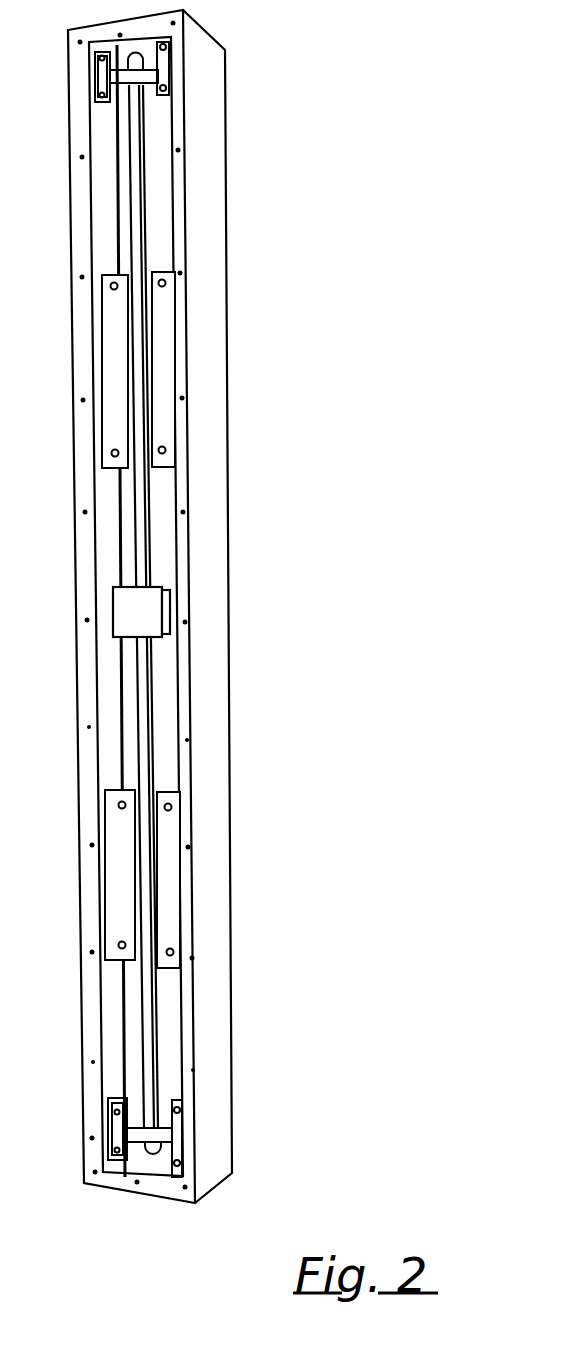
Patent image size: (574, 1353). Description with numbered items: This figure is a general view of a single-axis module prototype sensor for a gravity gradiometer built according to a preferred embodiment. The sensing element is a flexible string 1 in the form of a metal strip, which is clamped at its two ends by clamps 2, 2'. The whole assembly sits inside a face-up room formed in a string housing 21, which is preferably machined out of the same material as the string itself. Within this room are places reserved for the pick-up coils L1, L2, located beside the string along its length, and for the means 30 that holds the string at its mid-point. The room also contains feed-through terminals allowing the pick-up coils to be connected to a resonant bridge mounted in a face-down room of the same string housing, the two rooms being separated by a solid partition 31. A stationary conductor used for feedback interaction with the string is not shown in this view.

The flexible string 1 is at (135, 159).
The clamp 2 is at (189, 58).
The clamp 2' is at (205, 1133).
The string housing 21 is at (203, 115).
The means to hold the string at its mid-point 30 is at (143, 610).
The solid partition 31 is at (160, 665).
The pick-up coil L1 is at (167, 348).
The pick-up coil L2 is at (170, 877).